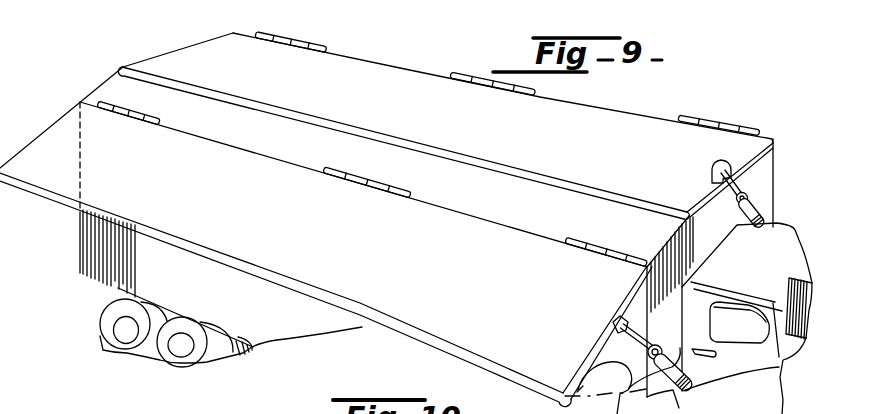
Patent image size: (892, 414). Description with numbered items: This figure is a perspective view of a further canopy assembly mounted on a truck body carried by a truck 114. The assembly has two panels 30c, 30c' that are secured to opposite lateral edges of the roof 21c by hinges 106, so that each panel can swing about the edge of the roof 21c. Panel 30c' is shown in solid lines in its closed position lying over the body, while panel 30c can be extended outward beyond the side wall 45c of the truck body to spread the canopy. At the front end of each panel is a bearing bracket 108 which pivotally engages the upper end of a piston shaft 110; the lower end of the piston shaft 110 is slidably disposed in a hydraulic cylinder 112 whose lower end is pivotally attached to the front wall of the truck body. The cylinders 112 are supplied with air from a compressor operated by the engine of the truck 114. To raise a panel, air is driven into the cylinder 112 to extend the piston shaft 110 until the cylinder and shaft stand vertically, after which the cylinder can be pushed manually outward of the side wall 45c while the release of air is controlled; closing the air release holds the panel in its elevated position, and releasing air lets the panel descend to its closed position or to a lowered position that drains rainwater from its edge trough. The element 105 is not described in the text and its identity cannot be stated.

The roof 21c is at (115, 95).
The panel 30c is at (326, 233).
The panel 30c' is at (445, 113).
The side wall 45c is at (780, 182).
The lower lip of side panel 105 is at (55, 208).
The hinge 106 is at (732, 100).
The bearing bracket 108 is at (735, 165).
The piston shaft 110 is at (622, 381).
The hydraulic cylinder 112 is at (744, 318).
The truck 114 is at (784, 346).